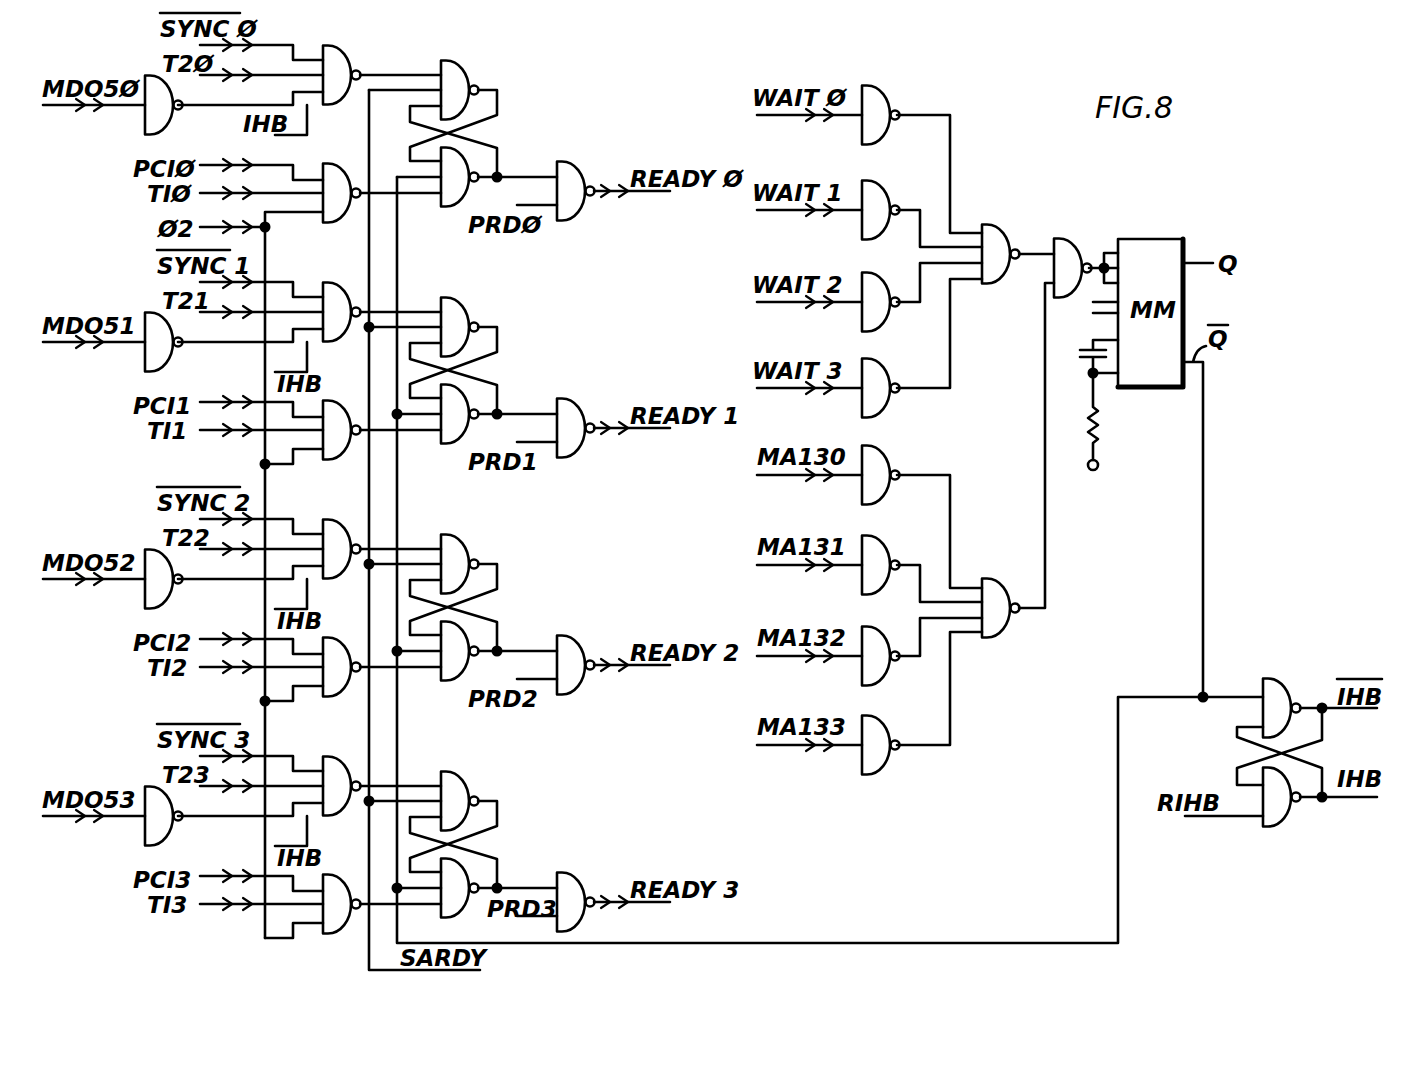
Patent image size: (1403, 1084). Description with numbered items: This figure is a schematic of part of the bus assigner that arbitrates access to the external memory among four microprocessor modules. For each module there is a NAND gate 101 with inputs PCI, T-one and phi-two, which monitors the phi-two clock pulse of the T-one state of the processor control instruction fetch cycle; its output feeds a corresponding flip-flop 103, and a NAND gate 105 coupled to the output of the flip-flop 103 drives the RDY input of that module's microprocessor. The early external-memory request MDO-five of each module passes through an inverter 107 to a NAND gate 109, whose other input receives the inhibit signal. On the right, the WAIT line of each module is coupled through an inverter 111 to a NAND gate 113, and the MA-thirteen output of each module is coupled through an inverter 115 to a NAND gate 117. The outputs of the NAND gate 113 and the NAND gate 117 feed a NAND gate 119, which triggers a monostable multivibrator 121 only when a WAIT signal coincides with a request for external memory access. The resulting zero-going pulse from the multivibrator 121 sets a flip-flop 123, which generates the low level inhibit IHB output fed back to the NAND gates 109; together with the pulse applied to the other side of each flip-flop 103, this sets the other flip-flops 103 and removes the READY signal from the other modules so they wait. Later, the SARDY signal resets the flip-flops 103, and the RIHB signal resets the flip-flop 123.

The NAND gate 101 is at (335, 175).
The flip-flop 103 is at (485, 135).
The NAND gate 105 is at (576, 174).
The inverter 107 is at (165, 121).
The NAND gate 109 is at (347, 63).
The inverter 111 is at (880, 103).
The NAND gate 113 is at (995, 243).
The inverter 115 is at (875, 470).
The NAND gate 117 is at (993, 597).
The NAND gate 119 is at (1063, 257).
The monostable multivibrator 121 is at (1147, 250).
The flip-flop 123 is at (1245, 753).